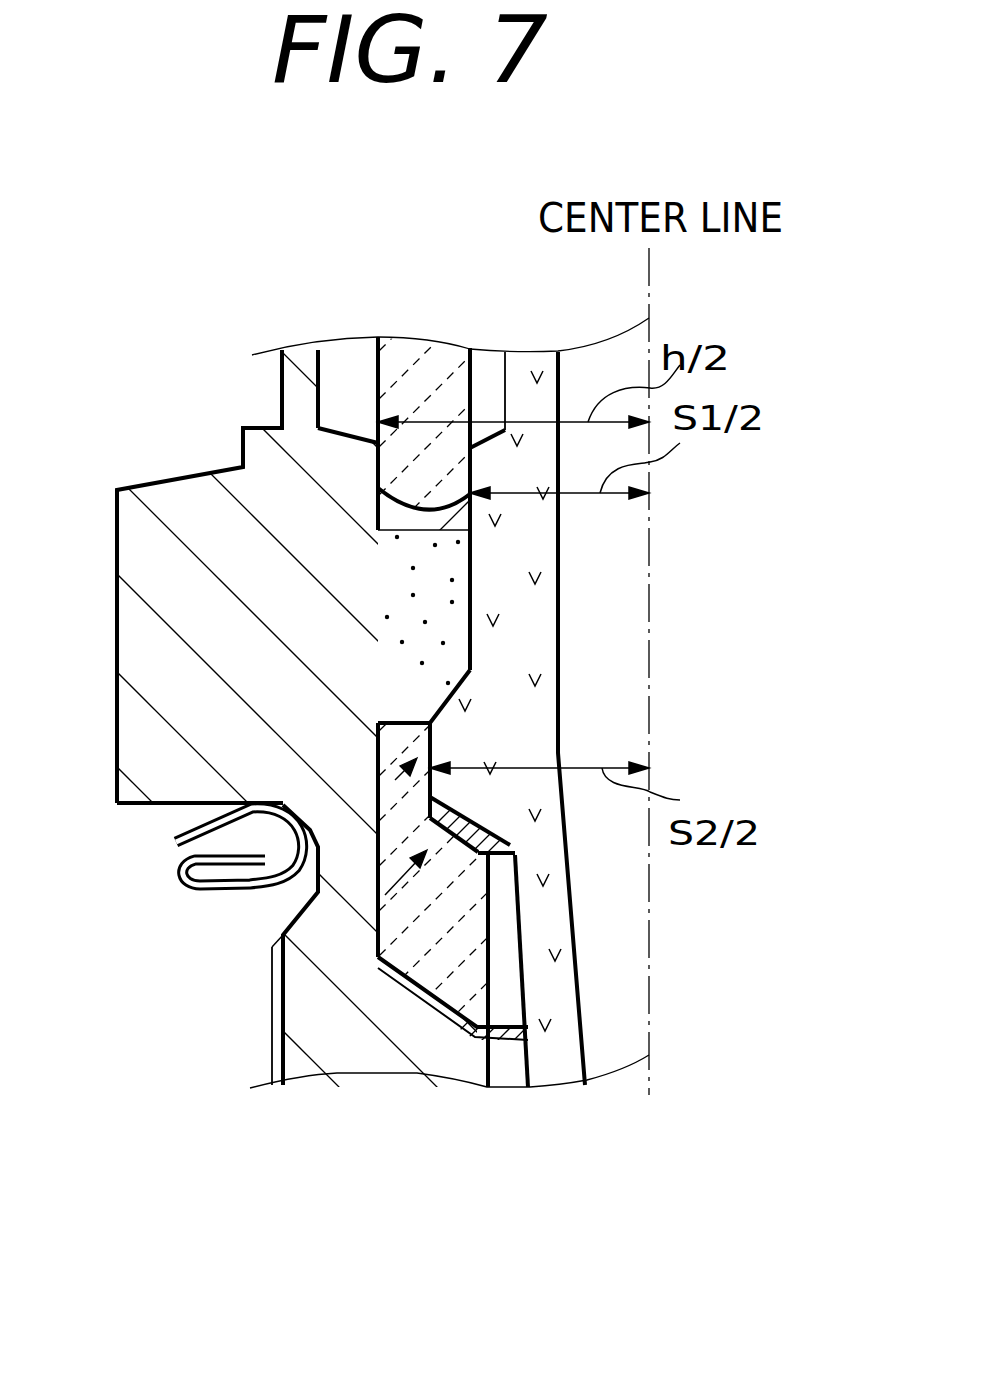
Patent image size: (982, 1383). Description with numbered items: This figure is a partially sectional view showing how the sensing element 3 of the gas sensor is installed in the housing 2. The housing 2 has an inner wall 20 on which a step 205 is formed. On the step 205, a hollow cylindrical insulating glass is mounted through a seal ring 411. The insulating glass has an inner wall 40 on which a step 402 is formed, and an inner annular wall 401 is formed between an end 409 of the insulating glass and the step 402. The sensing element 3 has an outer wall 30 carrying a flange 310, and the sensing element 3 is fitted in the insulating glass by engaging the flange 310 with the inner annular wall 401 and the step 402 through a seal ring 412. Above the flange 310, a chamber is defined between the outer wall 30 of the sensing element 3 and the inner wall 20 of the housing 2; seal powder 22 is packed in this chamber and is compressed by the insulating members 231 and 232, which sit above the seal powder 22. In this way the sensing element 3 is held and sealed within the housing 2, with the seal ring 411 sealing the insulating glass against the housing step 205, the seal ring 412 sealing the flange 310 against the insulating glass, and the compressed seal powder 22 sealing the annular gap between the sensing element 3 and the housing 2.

The housing 2 is at (300, 387).
The sensing element 3 is at (532, 385).
The inner wall 20 is at (395, 608).
The seal powder 22 is at (392, 504).
The outer wall 30 is at (450, 567).
The step 205 is at (430, 1040).
The insulating member 231 is at (378, 477).
The insulating member 232 is at (437, 377).
The flange 310 is at (440, 748).
The inner wall 40 is at (512, 942).
The inner annular wall 401 is at (398, 778).
The step 402 is at (380, 820).
The end 409 is at (398, 705).
The seal ring 411 is at (505, 1043).
The seal ring 412 is at (500, 857).